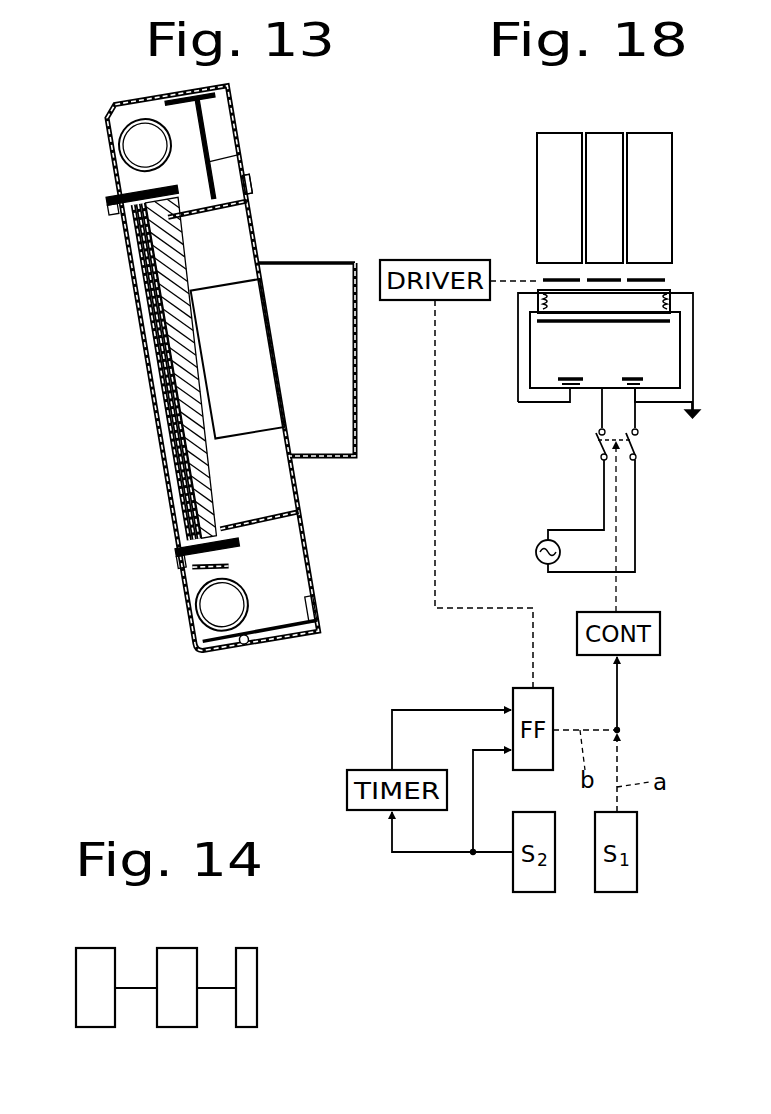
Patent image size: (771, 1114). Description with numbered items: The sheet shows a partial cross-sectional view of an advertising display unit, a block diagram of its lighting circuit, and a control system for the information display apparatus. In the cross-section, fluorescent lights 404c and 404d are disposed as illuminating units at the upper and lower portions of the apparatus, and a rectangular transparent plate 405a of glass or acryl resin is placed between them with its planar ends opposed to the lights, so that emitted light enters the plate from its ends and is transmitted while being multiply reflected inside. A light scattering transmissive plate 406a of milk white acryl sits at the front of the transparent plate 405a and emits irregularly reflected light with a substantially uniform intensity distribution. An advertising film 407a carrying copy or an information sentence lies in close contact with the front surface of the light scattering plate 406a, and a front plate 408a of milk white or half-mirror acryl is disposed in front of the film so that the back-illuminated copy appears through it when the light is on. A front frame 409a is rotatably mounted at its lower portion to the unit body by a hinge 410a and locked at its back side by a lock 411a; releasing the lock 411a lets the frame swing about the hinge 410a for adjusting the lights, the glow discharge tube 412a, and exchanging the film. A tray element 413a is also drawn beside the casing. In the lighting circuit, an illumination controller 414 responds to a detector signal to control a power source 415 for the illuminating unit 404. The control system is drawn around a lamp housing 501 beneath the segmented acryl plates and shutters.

In FIG. 13, the fluorescent light 404c is at (132, 150).
In FIG. 13, the fluorescent light 404d is at (210, 612).
In FIG. 13, the front frame 409a is at (115, 182).
In FIG. 13, the transparent plate 405a is at (163, 277).
In FIG. 13, the light scattering transmissive plate 406a is at (142, 243).
In FIG. 13, the advertising film 407a is at (157, 330).
In FIG. 13, the front plate 408a is at (170, 443).
In FIG. 13, the lock 411a is at (245, 168).
In FIG. 13, the glow discharge tube 412a is at (243, 423).
In FIG. 13, the tray 413a is at (310, 262).
In FIG. 13, the hinge 410a is at (245, 653).
In FIG. 14, the illumination controller 414 is at (98, 1020).
In FIG. 14, the power source 415 is at (177, 1018).
In FIG. 14, the illuminating unit 404 is at (247, 1023).
In FIG. 18, the lamp 501 is at (573, 307).